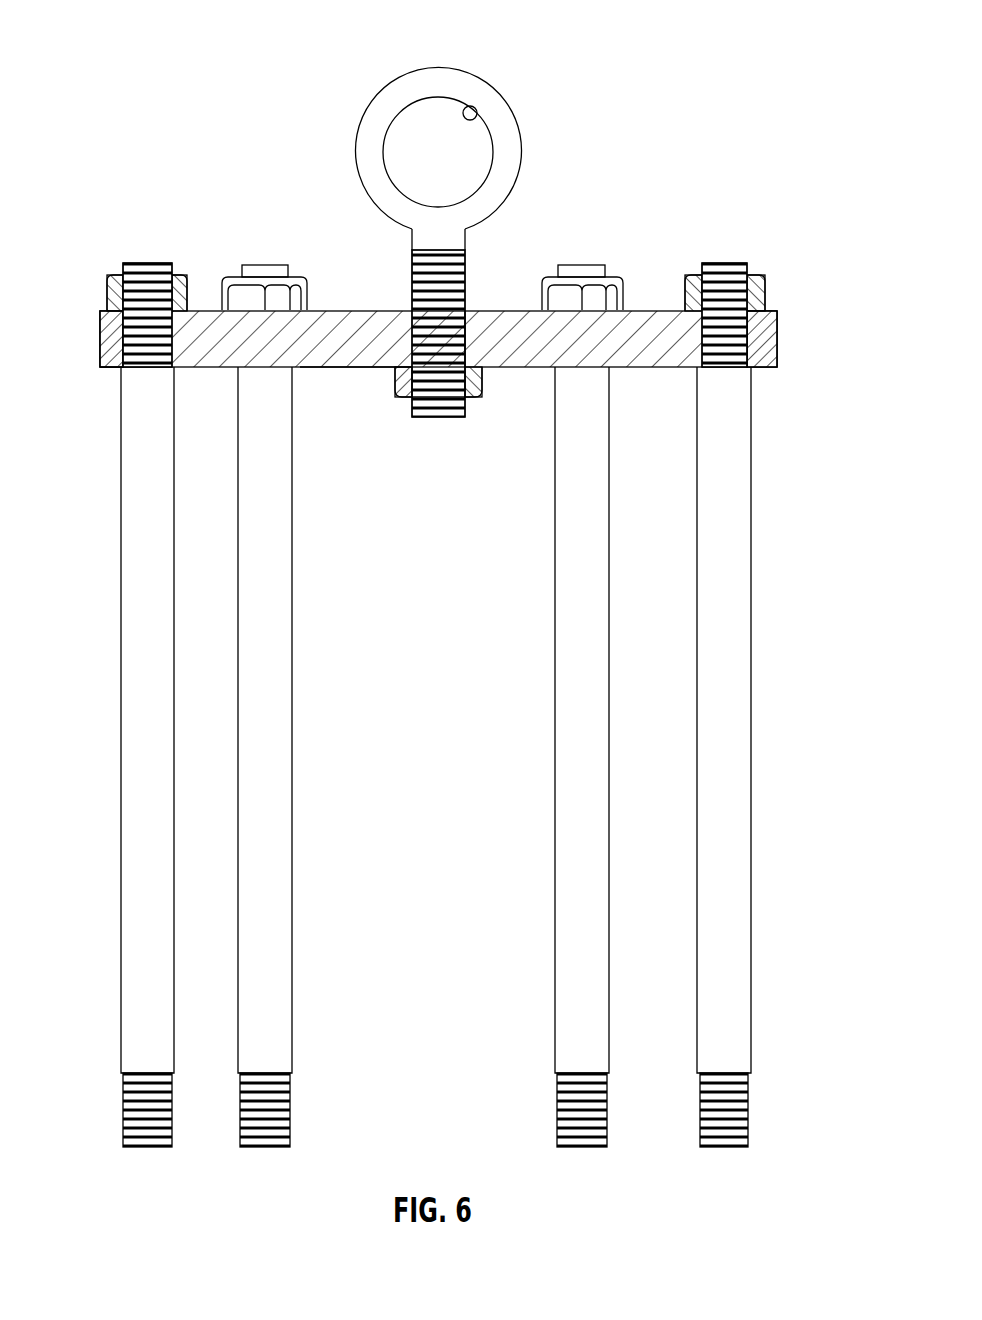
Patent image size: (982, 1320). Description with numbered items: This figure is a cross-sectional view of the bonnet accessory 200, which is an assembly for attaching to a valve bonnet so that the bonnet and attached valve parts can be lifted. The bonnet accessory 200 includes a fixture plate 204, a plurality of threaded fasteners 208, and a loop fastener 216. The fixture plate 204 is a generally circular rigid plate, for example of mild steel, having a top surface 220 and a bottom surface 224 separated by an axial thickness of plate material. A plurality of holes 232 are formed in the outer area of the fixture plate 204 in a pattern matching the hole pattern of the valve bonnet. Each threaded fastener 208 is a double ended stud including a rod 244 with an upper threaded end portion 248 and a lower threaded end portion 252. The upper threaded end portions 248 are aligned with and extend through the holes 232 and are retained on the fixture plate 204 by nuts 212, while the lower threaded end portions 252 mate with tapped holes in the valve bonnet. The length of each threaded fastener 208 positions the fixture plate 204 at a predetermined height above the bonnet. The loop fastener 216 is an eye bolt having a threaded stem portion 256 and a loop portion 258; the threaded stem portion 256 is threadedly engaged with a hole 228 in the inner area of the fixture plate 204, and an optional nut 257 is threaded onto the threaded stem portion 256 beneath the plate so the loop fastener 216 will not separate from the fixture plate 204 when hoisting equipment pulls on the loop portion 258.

The bonnet accessory 200 is at (366, 62).
The fixture plate 204 is at (778, 318).
The threaded fasteners 208 is at (121, 673).
The nuts 212 is at (107, 292).
The loop fastener 216 is at (521, 150).
The top surface 220 is at (497, 312).
The bottom surface 224 is at (353, 368).
The hole 228 is at (413, 328).
The holes 232 is at (115, 323).
The rod 244 is at (130, 527).
The upper threaded end portion 248 is at (118, 351).
The lower threaded end portion 252 is at (125, 1106).
The threaded stem portion 256 is at (468, 399).
The nut 257 is at (404, 398).
The loop portion 258 is at (476, 117).